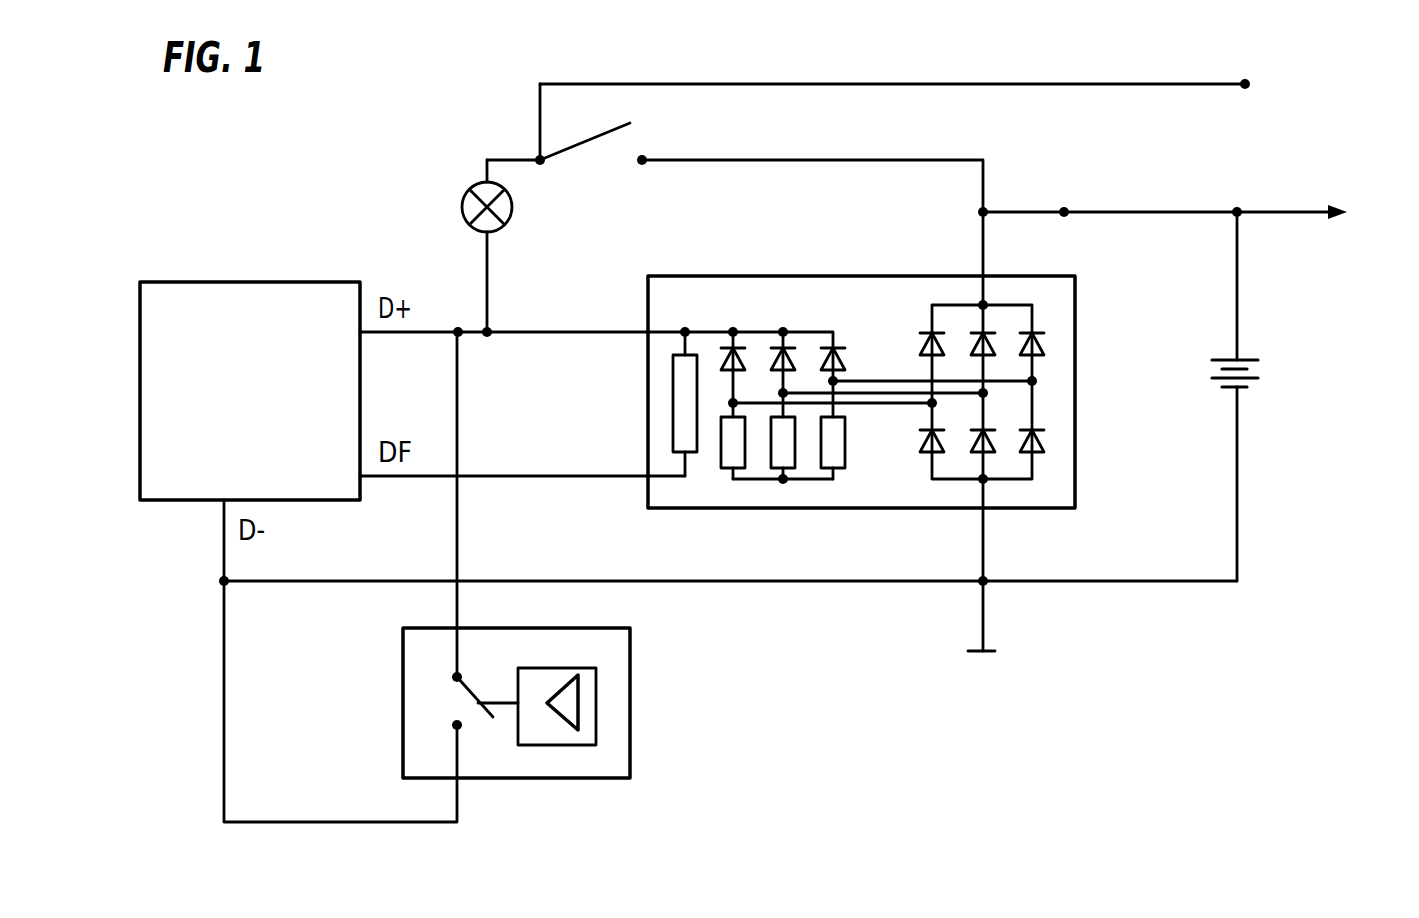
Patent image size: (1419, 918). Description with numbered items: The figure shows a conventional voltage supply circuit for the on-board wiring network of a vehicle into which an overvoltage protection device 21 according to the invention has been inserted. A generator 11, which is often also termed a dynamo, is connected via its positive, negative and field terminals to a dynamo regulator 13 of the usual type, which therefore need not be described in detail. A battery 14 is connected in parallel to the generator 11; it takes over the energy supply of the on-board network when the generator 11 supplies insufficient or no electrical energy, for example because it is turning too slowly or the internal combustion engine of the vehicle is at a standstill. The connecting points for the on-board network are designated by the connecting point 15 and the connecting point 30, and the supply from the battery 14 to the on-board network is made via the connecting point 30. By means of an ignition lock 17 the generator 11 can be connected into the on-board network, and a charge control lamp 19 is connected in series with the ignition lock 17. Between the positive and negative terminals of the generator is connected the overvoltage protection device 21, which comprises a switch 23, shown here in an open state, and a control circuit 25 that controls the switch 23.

The generator 11 is at (703, 508).
The dynamo regulator 13 is at (250, 282).
The battery 14 is at (1266, 369).
The connecting point 15 is at (895, 68).
The ignition lock 17 is at (622, 128).
The charge control lamp 19 is at (512, 210).
The overvoltage protection device 21 is at (503, 778).
The switch 23 is at (468, 701).
The control circuit 25 is at (596, 720).
The connecting point 30 is at (1197, 193).